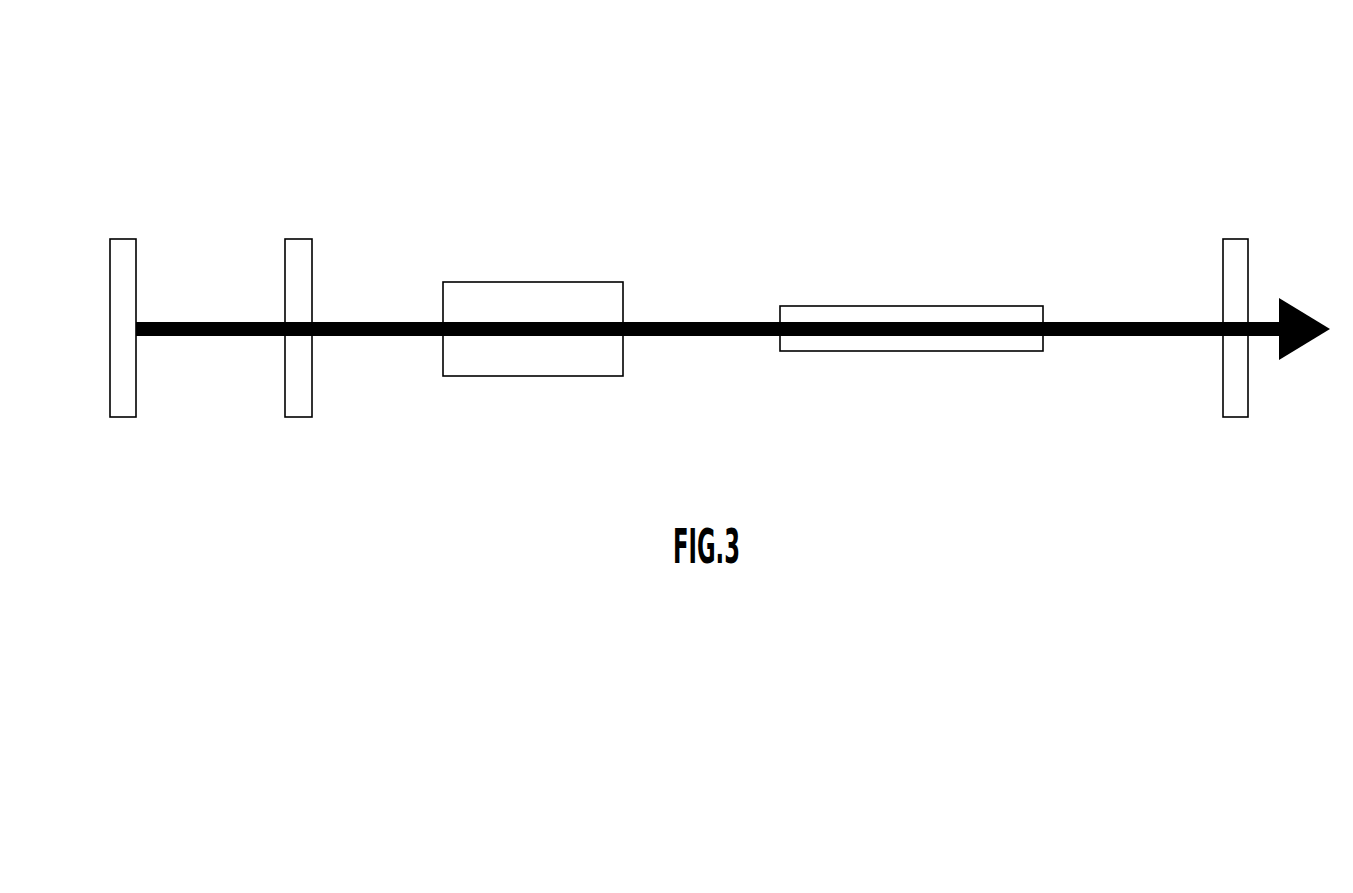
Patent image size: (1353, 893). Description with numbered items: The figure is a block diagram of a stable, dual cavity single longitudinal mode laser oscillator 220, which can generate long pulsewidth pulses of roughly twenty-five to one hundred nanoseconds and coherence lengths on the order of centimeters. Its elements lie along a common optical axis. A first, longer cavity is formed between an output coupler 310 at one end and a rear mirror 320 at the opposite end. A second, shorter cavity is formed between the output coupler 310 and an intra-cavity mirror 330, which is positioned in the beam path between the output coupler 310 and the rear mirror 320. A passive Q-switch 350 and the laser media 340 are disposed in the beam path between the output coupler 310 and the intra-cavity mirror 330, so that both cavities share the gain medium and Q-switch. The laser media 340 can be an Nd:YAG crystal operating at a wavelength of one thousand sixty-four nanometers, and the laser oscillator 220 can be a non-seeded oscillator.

The dual cavity SLM laser oscillator 220 is at (1072, 92).
The output coupler 310 is at (1223, 285).
The rear mirror 320 is at (123, 239).
The intra-cavity mirror 330 is at (298, 239).
The laser media 340 is at (970, 306).
The passive Q-switch 350 is at (562, 282).